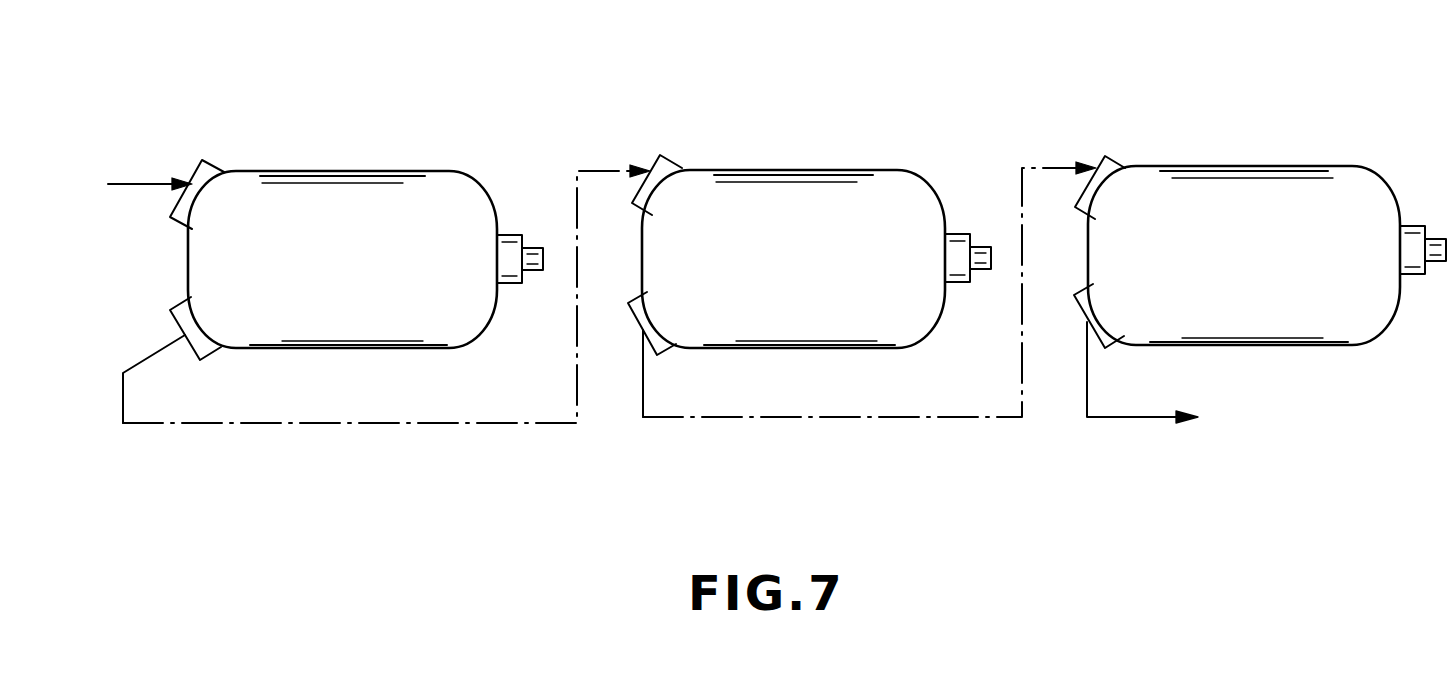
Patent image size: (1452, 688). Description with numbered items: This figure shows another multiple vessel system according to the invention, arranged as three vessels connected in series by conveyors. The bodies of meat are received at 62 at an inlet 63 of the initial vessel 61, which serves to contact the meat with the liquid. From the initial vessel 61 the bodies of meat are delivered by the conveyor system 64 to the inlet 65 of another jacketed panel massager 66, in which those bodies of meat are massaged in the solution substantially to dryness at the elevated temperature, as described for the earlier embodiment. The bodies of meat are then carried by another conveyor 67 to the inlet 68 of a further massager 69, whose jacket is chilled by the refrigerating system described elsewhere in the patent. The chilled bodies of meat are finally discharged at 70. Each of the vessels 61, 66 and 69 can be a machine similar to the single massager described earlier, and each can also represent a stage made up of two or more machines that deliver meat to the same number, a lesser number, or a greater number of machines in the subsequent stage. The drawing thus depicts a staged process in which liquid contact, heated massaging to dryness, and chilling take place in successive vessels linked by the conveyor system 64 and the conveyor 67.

The initial vessel 61 is at (430, 168).
The meat receiving point 62 is at (139, 184).
The inlet 63 is at (208, 178).
The conveyor system 64 is at (297, 423).
The inlet 65 is at (658, 157).
The jacketed panel massager 66 is at (863, 160).
The conveyor 67 is at (820, 418).
The inlet 68 is at (1103, 158).
The massager 69 is at (1293, 160).
The discharge point 70 is at (1085, 382).